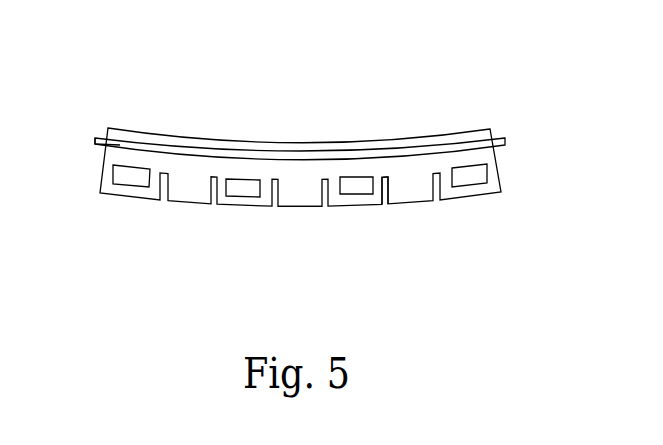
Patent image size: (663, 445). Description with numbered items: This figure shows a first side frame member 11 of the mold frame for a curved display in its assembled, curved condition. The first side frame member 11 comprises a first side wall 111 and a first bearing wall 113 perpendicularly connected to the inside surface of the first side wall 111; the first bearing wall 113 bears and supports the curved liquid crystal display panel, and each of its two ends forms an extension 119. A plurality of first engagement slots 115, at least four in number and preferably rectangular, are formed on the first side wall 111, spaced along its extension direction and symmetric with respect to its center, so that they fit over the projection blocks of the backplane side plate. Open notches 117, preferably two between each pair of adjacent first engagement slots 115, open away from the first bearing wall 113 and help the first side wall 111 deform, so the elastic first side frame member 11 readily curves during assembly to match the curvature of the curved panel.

The first side frame member 11 is at (190, 168).
The first side wall 111 is at (293, 183).
The first bearing wall 113 is at (308, 157).
The first engagement slot 115 is at (237, 187).
The open notch 117 is at (385, 188).
The extension 119 is at (95, 141).